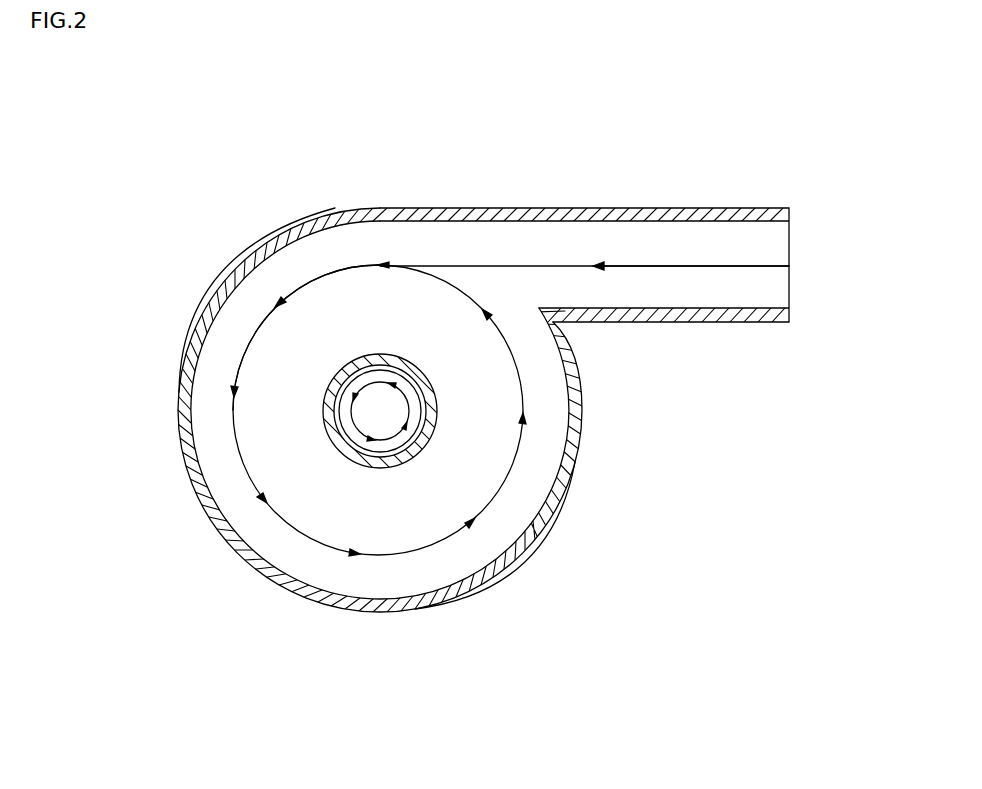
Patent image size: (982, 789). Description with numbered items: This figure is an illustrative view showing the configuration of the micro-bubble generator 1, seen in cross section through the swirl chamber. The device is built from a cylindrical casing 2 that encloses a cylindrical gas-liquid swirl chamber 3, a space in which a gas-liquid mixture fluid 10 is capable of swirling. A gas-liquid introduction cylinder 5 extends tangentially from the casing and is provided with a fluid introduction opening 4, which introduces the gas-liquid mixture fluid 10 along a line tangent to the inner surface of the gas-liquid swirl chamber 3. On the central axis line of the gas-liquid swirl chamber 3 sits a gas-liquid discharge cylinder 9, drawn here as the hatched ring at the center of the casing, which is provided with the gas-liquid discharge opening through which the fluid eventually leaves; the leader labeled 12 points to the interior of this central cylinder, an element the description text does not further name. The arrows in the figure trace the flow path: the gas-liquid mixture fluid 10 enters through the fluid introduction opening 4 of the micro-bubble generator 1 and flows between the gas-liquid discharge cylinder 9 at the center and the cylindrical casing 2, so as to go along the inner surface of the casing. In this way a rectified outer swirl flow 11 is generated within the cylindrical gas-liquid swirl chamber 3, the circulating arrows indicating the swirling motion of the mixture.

The micro-bubble generator 1 is at (393, 160).
The cylindrical casing 2 is at (572, 493).
The cylindrical gas-liquid swirl chamber 3 is at (279, 546).
The fluid introduction opening 4 is at (527, 251).
The gas-liquid introduction cylinder 5 is at (715, 323).
The gas-liquid discharge cylinder 9 is at (410, 465).
The gas-liquid mixture fluid 10 is at (667, 248).
The rectified outer swirl flow 11 is at (234, 449).
The central outlet 12 is at (356, 384).